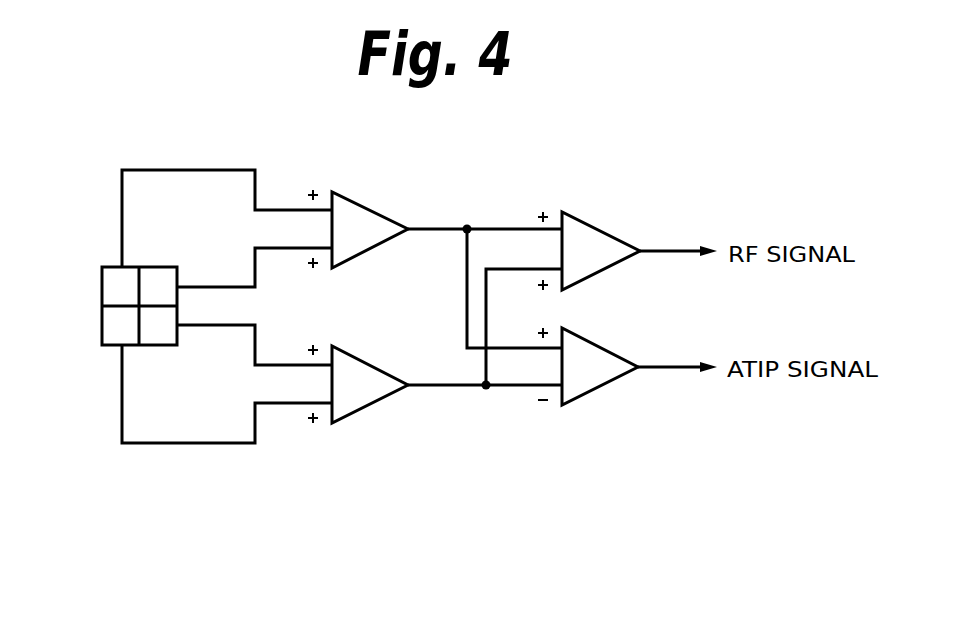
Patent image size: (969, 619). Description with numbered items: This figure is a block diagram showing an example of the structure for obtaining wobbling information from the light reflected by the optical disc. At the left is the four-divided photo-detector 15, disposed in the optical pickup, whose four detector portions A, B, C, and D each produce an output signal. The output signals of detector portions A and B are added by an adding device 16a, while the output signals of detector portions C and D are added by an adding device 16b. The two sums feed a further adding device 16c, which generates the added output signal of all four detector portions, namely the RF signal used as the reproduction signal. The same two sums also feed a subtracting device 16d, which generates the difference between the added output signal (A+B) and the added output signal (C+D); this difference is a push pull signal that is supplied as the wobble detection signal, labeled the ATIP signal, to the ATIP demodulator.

The four-divided photo-detector 15 is at (102, 312).
The adding device 16a is at (375, 208).
The adding device 16b is at (372, 407).
The adding device 16c is at (605, 228).
The subtracting device 16d is at (603, 387).